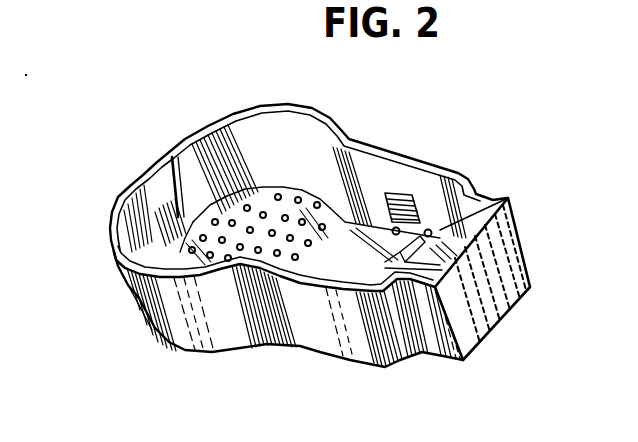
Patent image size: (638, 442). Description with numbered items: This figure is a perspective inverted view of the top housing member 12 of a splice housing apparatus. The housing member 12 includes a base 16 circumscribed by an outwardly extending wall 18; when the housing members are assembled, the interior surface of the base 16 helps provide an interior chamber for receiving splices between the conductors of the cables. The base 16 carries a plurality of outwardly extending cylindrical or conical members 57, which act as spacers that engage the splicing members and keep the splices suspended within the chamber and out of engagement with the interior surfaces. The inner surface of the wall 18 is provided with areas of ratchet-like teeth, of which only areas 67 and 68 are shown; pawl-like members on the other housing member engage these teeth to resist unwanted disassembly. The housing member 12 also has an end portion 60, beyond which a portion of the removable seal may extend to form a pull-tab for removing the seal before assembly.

The housing member 12 is at (330, 123).
The base 16 is at (350, 258).
The wall 18 is at (162, 304).
The cylindrical or conical members 57 is at (232, 220).
The end portion 60 is at (486, 266).
The area of ratchet-like teeth 67 is at (407, 191).
The area of ratchet-like teeth 68 is at (162, 205).